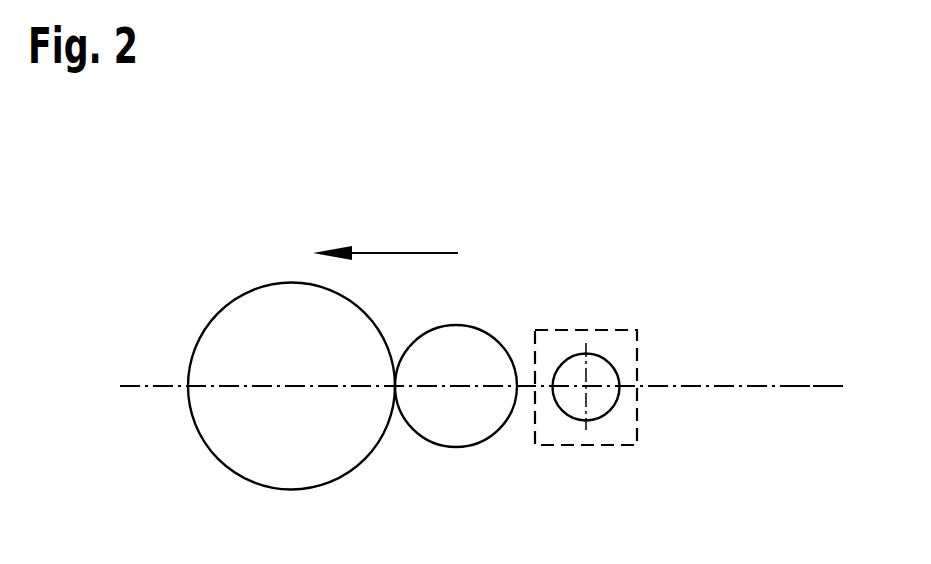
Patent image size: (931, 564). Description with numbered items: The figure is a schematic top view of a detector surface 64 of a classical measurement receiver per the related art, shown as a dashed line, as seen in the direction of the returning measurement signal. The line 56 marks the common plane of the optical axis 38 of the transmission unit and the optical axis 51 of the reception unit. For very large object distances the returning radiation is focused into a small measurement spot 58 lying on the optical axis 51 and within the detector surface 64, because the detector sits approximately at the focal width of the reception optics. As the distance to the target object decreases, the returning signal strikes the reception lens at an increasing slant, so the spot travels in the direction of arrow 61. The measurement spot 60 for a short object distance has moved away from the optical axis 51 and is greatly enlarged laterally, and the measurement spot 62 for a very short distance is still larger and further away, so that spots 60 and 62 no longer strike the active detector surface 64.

The optical axis of transmission unit 38 is at (793, 392).
The optical axis of reception unit 51 is at (589, 384).
The common plane of optical axes 56 is at (143, 388).
The measurement spot for very large object distances 58 is at (576, 363).
The measurement spot for short object distance 60 is at (473, 340).
The arrow 61 is at (397, 250).
The measurement spot for very short measurement distance 62 is at (252, 303).
The detector surface 64 is at (615, 432).